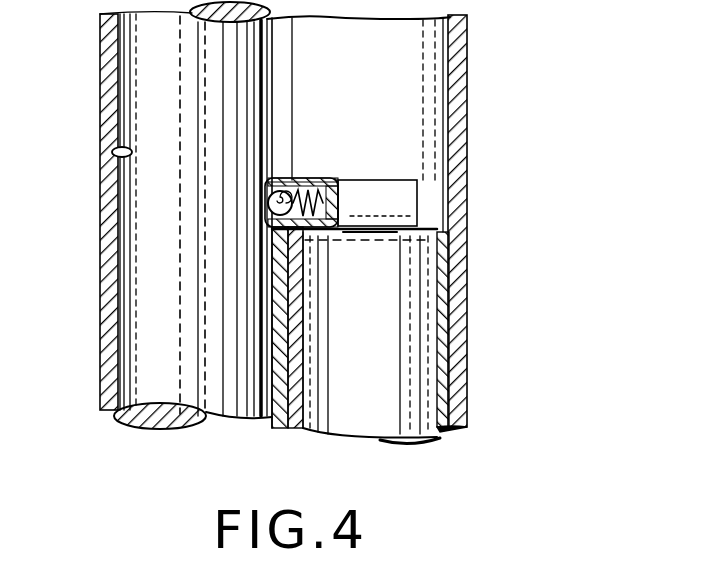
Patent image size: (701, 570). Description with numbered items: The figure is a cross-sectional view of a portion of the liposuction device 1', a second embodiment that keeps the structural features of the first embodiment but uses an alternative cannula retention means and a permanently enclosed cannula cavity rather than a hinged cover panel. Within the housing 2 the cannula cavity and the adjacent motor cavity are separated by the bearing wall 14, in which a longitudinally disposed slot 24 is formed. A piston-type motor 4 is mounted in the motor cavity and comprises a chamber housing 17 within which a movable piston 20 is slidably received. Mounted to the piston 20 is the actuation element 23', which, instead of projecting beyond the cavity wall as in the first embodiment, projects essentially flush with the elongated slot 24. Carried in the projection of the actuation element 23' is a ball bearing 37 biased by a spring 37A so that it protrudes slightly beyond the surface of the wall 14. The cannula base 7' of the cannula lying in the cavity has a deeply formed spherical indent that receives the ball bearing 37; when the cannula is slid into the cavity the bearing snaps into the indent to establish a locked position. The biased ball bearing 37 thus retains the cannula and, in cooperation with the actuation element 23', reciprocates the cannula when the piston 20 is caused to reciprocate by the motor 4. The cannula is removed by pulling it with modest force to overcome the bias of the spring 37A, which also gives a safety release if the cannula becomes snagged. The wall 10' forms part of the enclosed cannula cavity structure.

The liposuction device 1' is at (441, 48).
The outer barrel wall 10' is at (118, 211).
The bearing wall 14 is at (112, 152).
The cannula base 7' is at (163, 215).
The slot 24 is at (283, 72).
The ball bearing 37 is at (333, 176).
The spring 37A is at (330, 178).
The actuation element 23' is at (405, 202).
The housing 2 is at (468, 225).
The movable piston 20 is at (438, 232).
The piston-type motor 4 is at (390, 352).
The chamber housing 17 is at (452, 428).